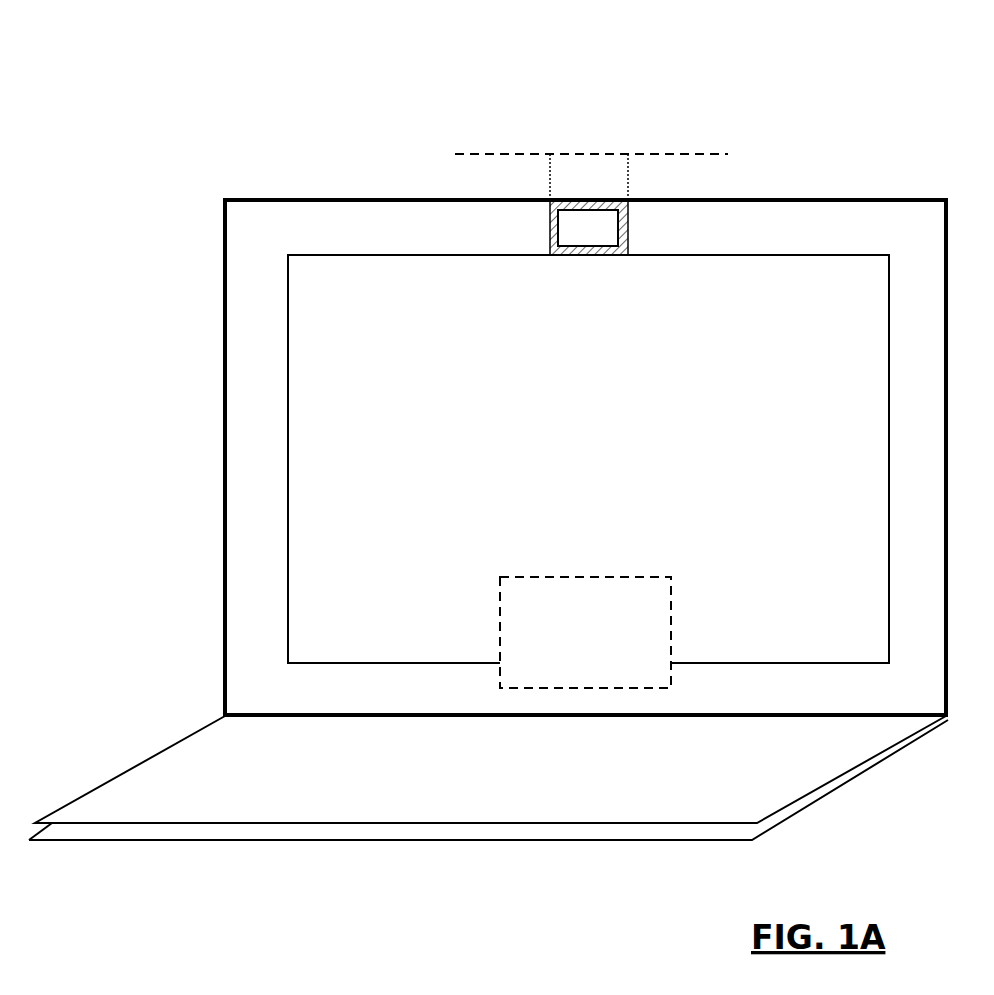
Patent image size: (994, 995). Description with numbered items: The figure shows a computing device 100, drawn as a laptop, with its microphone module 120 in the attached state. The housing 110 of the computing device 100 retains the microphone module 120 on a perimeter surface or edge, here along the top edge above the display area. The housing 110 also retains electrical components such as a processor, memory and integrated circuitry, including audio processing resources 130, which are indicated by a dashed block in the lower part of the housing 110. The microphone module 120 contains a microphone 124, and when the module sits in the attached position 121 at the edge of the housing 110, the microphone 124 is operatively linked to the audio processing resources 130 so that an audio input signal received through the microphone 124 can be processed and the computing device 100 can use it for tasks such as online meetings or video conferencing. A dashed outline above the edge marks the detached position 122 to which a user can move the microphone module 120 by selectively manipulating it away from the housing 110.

The computing device 100 is at (332, 122).
The housing 110 is at (314, 231).
The microphone module 120 is at (632, 228).
The attached position 121 is at (590, 213).
The detached position 122 is at (590, 176).
The microphone 124 is at (590, 230).
The audio processing resources 130 is at (585, 632).